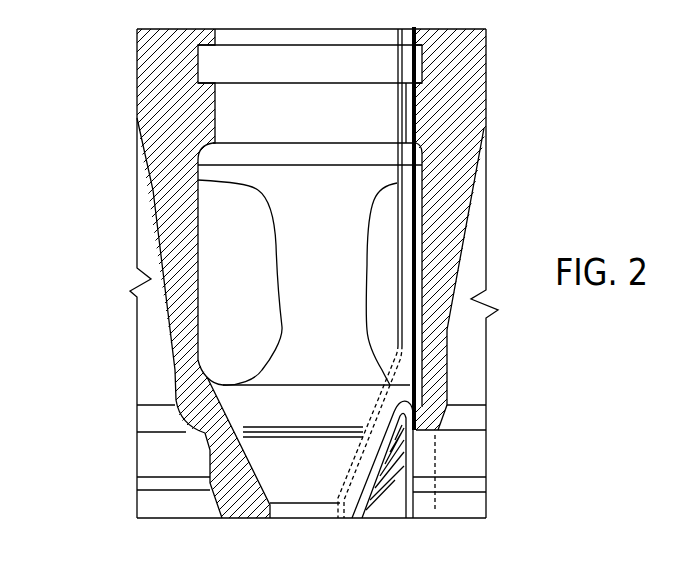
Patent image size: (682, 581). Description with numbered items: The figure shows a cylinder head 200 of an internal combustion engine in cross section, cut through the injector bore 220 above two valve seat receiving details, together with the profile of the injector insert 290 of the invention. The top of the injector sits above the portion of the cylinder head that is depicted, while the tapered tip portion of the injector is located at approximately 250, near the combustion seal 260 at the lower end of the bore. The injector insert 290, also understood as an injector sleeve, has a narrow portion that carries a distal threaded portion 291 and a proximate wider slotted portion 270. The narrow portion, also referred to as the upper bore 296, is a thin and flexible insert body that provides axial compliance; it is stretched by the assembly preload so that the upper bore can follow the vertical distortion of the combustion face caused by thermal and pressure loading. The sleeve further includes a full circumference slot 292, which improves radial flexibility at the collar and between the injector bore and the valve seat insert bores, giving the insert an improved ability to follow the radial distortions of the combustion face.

The cylinder head 200 is at (64, 241).
The injector bore 220 is at (207, 333).
The tapered tip portion location 250 is at (270, 477).
The combustion seal 260 is at (265, 440).
The proximate wider slotted portion 270 is at (414, 457).
The injector insert 290 is at (417, 102).
The distal threaded portion 291 is at (417, 60).
The full circumference slot 292 is at (365, 503).
The upper bore 296 is at (417, 204).